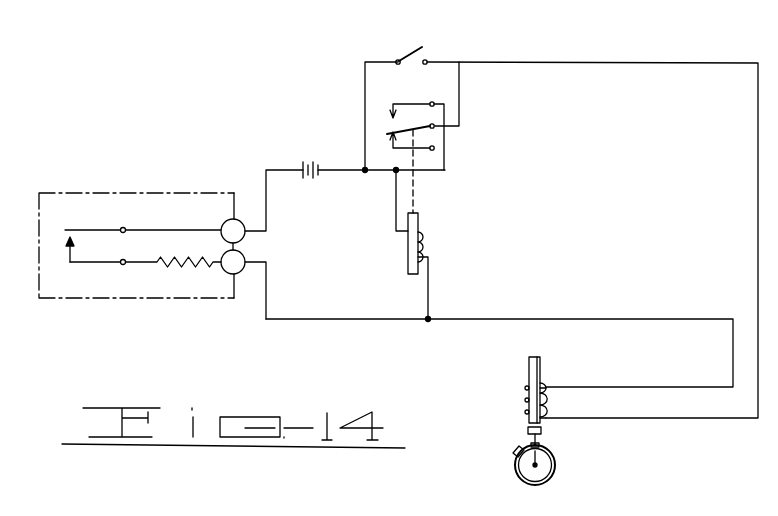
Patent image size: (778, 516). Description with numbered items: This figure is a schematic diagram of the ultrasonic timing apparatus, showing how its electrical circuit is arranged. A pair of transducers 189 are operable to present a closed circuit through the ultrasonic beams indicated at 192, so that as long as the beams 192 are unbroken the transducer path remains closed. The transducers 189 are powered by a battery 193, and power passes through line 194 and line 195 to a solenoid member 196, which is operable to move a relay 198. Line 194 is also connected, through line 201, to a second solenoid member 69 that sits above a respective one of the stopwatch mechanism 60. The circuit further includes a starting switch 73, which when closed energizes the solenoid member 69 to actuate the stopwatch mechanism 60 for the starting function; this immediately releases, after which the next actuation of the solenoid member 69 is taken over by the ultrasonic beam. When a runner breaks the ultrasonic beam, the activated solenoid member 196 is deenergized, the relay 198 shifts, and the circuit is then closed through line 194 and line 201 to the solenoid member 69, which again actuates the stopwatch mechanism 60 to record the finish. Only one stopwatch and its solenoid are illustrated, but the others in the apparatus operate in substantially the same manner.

The stopwatch mechanism 60 is at (548, 453).
The solenoid member 69 is at (531, 401).
The starting switch 73 is at (406, 56).
The transducers 189 is at (240, 228).
The beams 192 is at (72, 263).
The battery 193 is at (314, 160).
The line 194 is at (343, 173).
The line 195 is at (355, 321).
The solenoid member 196 is at (404, 244).
The relay 198 is at (422, 90).
The line 201 is at (615, 63).